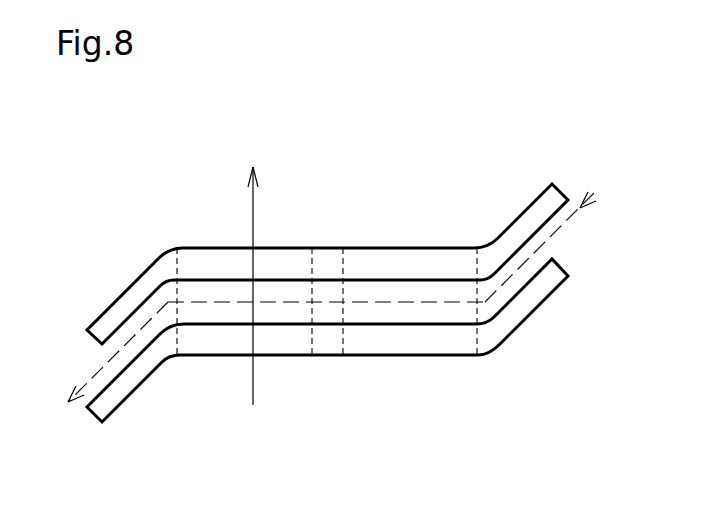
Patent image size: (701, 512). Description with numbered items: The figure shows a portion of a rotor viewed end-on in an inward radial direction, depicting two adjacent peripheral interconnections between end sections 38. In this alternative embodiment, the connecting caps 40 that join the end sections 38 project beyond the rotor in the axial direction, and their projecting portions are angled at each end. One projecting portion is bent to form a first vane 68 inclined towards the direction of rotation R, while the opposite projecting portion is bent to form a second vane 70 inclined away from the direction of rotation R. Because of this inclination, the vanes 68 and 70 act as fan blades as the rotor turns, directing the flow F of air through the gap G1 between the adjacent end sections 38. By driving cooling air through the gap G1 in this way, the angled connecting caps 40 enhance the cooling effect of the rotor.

The end sections 38 is at (203, 257).
The connecting caps 40 is at (280, 238).
The first vane 68 is at (513, 217).
The second vane 70 is at (132, 281).
The gap G1 is at (343, 319).
The direction of rotation R is at (255, 268).
The flow of air F is at (317, 312).